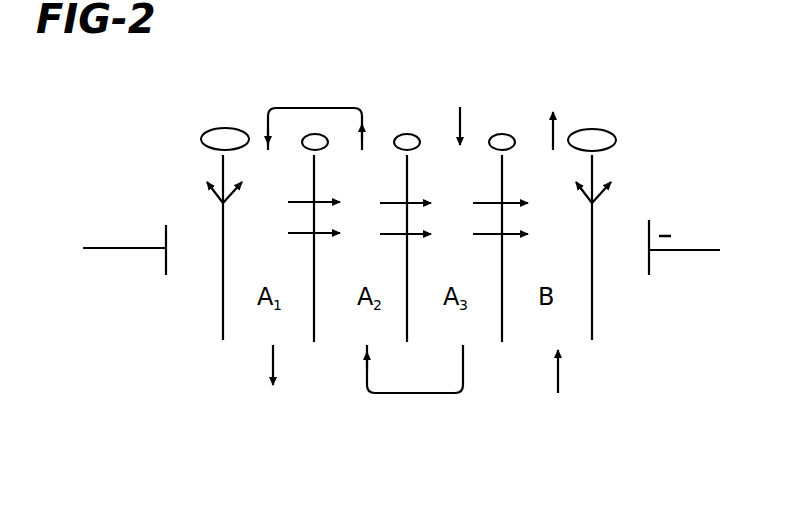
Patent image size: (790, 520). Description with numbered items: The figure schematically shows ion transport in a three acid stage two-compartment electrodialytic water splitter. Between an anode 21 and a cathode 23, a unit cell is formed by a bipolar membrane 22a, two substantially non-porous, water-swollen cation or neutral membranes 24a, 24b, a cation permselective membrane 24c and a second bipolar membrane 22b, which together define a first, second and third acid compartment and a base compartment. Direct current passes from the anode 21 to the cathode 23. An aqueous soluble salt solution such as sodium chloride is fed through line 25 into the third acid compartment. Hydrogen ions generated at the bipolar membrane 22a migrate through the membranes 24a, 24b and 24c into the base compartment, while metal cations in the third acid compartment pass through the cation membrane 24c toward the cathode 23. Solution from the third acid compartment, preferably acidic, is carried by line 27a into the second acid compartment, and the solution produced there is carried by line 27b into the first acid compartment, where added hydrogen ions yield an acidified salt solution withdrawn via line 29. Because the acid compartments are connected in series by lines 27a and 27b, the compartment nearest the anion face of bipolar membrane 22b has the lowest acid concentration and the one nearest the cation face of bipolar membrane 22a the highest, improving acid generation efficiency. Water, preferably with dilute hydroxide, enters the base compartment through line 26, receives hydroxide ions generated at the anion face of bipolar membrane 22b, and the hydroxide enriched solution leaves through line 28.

The anode 21 is at (163, 255).
The bipolar membrane 22a is at (223, 330).
The bipolar membrane 22b is at (610, 326).
The cathode 23 is at (649, 266).
The cation or neutral membrane 24a is at (314, 330).
The cation or neutral membrane 24b is at (422, 326).
The cation permselective membrane 24c is at (517, 326).
The line 25 is at (461, 118).
The line 26 is at (560, 373).
The line 27a is at (446, 393).
The line 27b is at (338, 84).
The line 28 is at (553, 125).
The line 29 is at (300, 363).